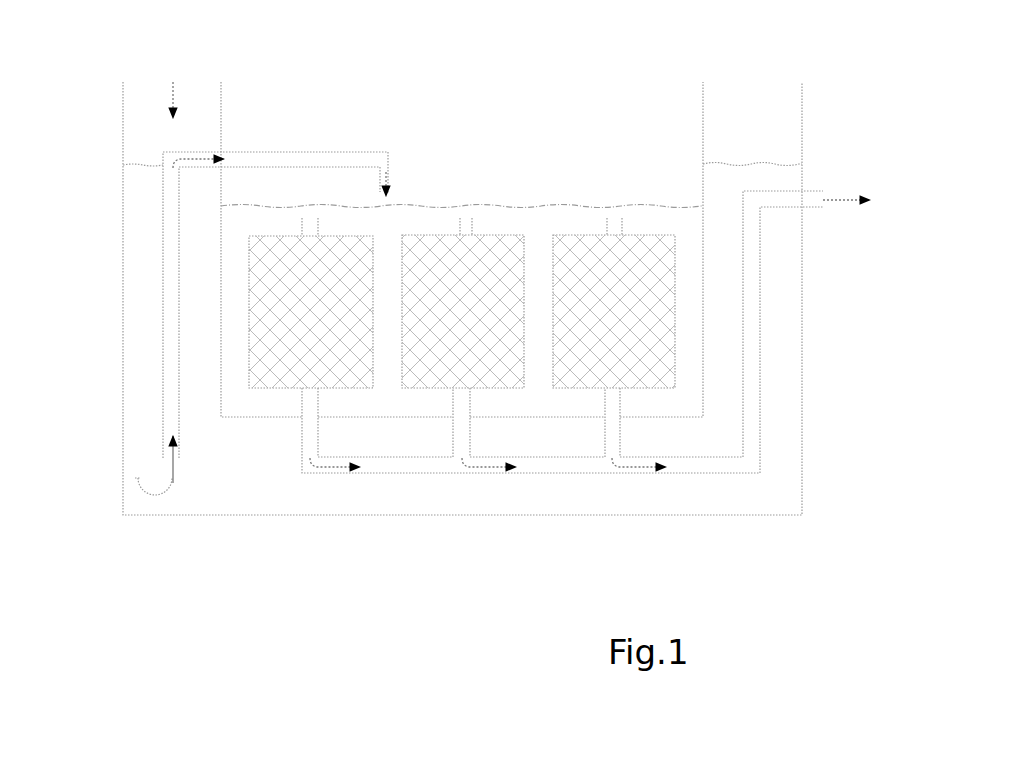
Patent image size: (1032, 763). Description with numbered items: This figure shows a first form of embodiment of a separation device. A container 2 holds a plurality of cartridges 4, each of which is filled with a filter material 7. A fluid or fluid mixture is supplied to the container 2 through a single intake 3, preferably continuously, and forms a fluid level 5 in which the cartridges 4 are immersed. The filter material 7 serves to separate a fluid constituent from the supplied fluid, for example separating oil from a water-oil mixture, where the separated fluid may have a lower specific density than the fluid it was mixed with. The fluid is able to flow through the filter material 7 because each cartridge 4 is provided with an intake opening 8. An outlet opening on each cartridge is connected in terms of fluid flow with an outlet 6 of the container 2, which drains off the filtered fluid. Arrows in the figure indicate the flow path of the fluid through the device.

The container 2 is at (703, 126).
The intake 3 is at (381, 173).
The cartridges 4 is at (348, 233).
The fluid level 5 is at (263, 205).
The outlet 6 is at (308, 393).
The filter material 7 is at (308, 323).
The intake opening 8 is at (615, 230).